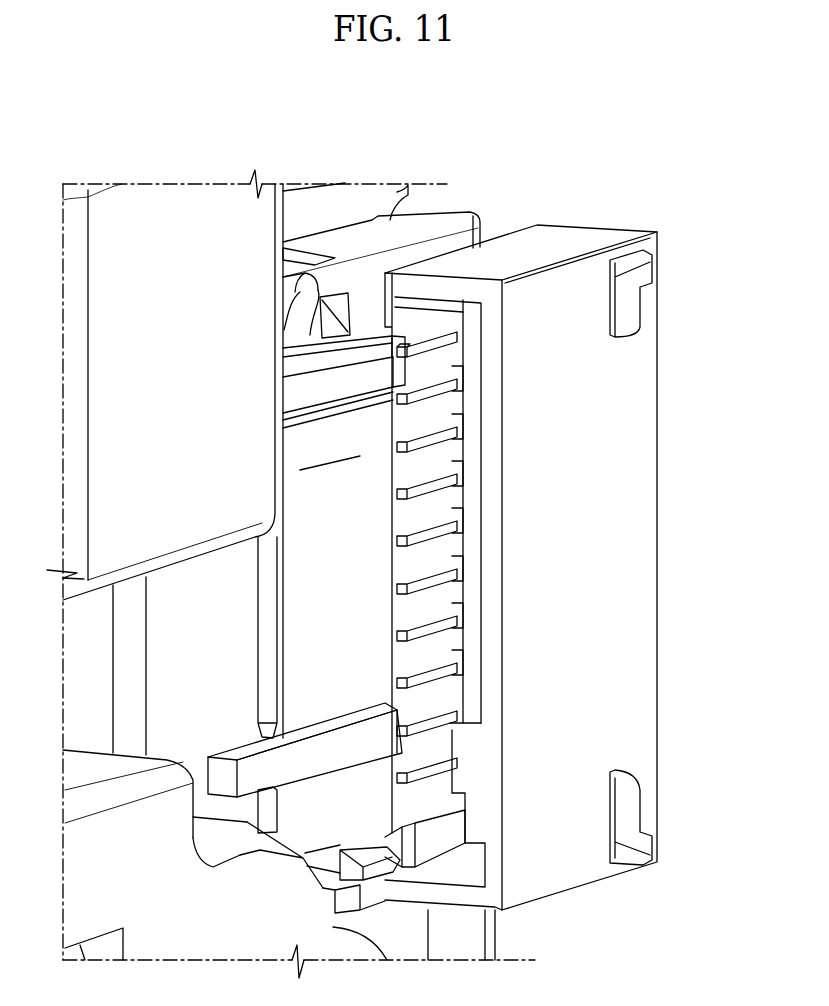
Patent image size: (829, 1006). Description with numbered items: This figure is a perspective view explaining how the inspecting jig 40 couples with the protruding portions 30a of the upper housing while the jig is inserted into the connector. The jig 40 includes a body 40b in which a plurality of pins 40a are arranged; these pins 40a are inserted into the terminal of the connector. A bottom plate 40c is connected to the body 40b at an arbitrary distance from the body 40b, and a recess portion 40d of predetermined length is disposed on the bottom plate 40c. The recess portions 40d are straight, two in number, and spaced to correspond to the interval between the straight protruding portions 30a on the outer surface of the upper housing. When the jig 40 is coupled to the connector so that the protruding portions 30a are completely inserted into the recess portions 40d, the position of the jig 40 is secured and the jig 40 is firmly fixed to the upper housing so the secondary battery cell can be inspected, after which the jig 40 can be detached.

The protruding portion 30a is at (347, 373).
The jig 40 is at (515, 559).
The pin 40a is at (430, 343).
The body 40b is at (572, 243).
The bottom plate 40c is at (330, 475).
The recess portion 40d is at (335, 402).